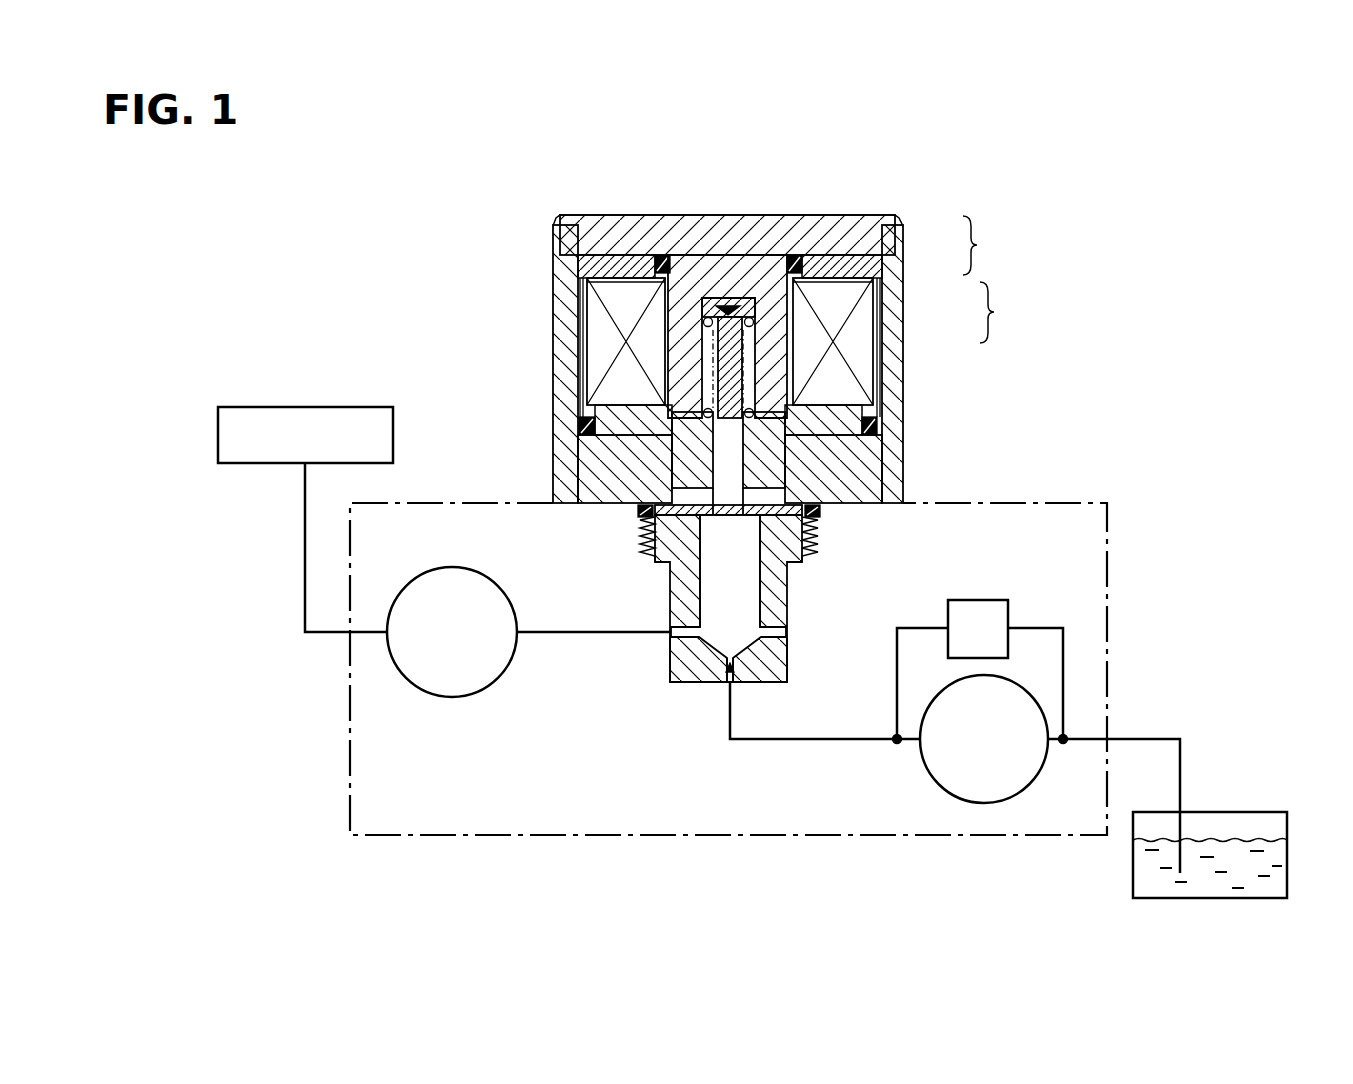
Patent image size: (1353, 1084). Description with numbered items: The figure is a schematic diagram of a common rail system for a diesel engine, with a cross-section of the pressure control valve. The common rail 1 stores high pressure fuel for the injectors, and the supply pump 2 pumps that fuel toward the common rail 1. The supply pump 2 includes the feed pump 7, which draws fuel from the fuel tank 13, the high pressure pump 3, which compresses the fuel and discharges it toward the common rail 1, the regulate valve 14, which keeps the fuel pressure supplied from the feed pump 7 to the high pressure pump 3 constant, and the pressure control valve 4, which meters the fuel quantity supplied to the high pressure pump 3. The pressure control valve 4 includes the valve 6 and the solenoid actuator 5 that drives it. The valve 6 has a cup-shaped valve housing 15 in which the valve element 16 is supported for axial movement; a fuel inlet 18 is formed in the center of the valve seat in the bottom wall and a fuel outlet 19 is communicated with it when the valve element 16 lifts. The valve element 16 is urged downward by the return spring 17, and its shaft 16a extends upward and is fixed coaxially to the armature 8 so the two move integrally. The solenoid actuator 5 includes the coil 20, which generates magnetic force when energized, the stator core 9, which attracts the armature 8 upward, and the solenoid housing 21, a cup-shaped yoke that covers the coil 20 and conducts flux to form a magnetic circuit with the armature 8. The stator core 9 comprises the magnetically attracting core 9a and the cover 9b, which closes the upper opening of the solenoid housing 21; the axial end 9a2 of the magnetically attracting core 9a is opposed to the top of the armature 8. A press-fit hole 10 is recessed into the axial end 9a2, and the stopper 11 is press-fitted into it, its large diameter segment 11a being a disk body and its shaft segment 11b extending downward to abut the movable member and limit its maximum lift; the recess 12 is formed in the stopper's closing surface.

The common rail 1 is at (313, 405).
The supply pump 2 is at (350, 752).
The high pressure pump 3 is at (437, 699).
The pressure control valve 4 is at (620, 528).
The solenoid actuator 5 is at (528, 220).
The valve 6 is at (662, 703).
The feed pump 7 is at (1031, 782).
The armature 8 is at (855, 462).
The stator core 9 is at (980, 245).
The magnetically attracting core 9a is at (770, 270).
The axial end 9a2 is at (660, 415).
The cover 9b is at (852, 240).
The press-fit hole 10 is at (705, 360).
The stopper 11 is at (1003, 312).
The large diameter segment 11a is at (753, 305).
The shaft segment 11b is at (760, 340).
The recess 12 is at (727, 300).
The fuel tank 13 is at (1220, 810).
The regulate valve 14 is at (988, 600).
The valve housing 15 is at (775, 570).
The valve element 16 is at (737, 598).
The shaft 16a is at (722, 455).
The return spring 17 is at (705, 327).
The fuel inlet 18 is at (727, 680).
The fuel outlet 19 is at (682, 640).
The coil 20 is at (860, 360).
The solenoid housing 21 is at (893, 405).